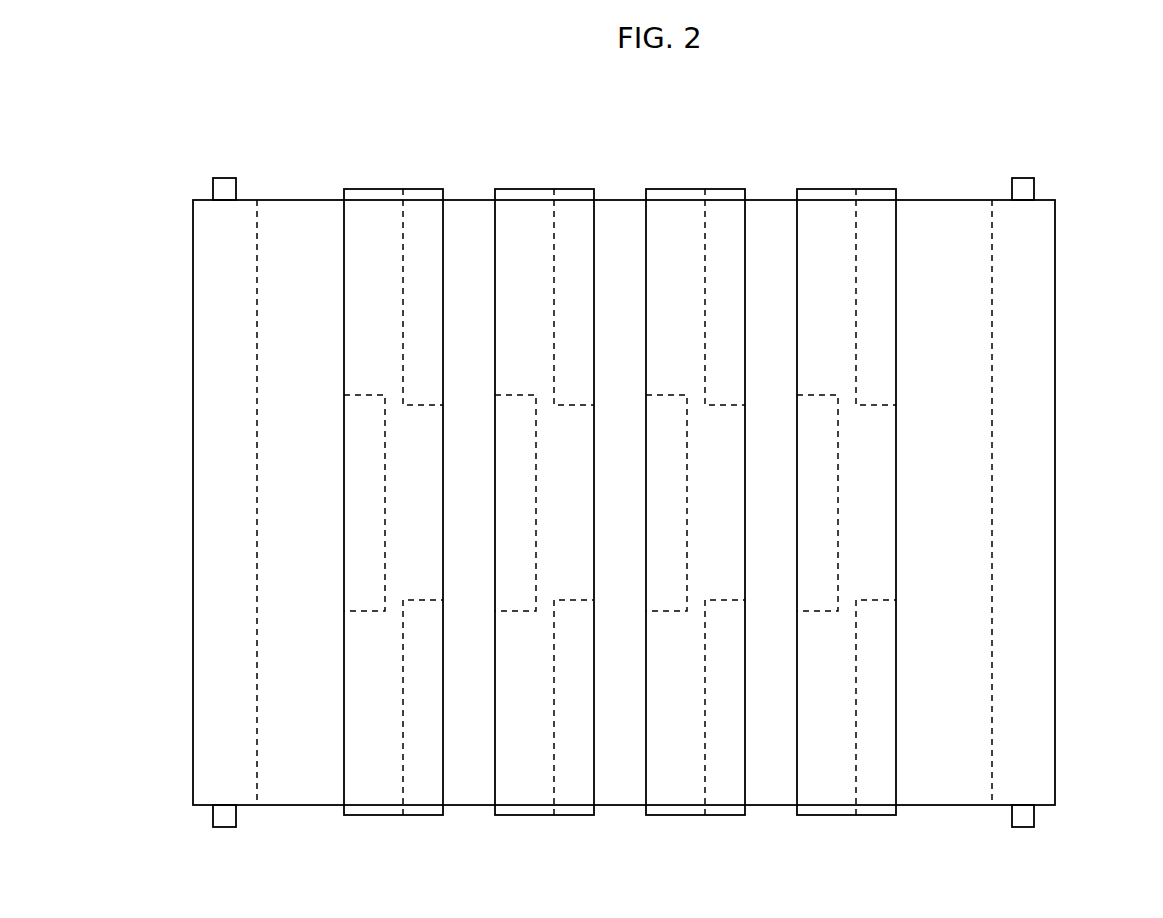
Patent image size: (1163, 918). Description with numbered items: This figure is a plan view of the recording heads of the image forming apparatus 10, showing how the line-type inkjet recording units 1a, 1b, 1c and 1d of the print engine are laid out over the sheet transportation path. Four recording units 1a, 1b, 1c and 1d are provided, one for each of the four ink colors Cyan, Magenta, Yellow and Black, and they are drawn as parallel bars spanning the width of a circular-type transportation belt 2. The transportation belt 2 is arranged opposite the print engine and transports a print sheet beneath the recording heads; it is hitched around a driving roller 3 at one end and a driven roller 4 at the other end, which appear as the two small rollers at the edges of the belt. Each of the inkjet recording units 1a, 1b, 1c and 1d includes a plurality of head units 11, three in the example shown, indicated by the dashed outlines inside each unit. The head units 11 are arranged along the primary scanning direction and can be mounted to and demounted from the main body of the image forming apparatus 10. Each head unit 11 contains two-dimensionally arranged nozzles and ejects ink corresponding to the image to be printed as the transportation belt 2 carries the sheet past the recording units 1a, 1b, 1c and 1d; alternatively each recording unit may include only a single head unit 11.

The image forming apparatus 10 is at (1138, 127).
The transportation belt 2 is at (948, 213).
The driving roller 3 is at (212, 185).
The driven roller 4 is at (1035, 190).
The inkjet recording unit 1a is at (810, 189).
The inkjet recording unit 1b is at (659, 189).
The inkjet recording unit 1c is at (508, 189).
The inkjet recording unit 1d is at (357, 189).
The head unit 11 is at (432, 222).